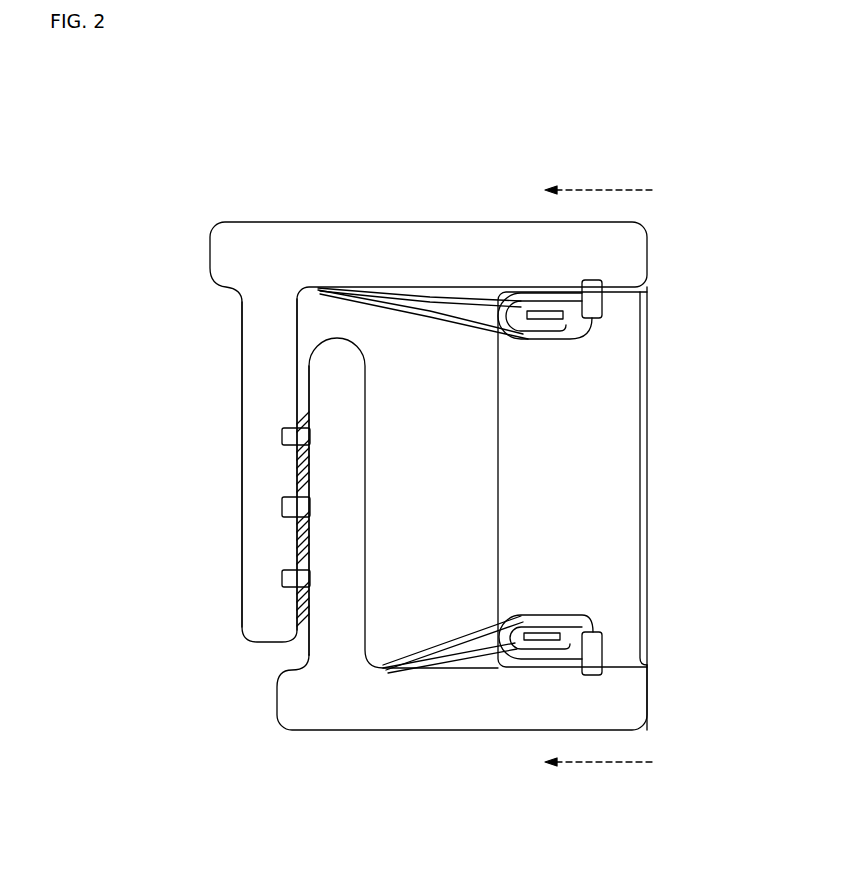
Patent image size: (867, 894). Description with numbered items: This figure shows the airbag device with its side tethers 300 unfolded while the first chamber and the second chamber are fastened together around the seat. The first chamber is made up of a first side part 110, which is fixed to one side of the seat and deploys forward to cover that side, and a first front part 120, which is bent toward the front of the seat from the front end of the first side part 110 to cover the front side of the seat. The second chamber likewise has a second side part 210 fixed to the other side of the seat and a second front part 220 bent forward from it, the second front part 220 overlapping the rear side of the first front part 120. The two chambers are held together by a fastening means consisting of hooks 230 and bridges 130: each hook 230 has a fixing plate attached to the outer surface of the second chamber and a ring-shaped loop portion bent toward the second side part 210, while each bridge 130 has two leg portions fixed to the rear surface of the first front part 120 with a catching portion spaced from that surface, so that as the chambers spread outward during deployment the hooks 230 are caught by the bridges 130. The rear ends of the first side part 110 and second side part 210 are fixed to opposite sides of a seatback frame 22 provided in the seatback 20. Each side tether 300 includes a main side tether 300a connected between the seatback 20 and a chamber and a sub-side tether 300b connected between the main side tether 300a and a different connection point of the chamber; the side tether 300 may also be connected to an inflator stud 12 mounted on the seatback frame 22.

The seatback 20 is at (607, 478).
The inflator stud 12 is at (603, 310).
The seatback frame 22 is at (547, 293).
The first side part 110 is at (342, 255).
The first front part 120 is at (267, 345).
The bridge 130 is at (290, 500).
The second side part 210 is at (405, 700).
The second front part 220 is at (340, 607).
The hook 230 is at (300, 412).
The side tether 300 is at (512, 142).
The main side tether 300a is at (393, 297).
The sub-side tether 300b is at (437, 290).